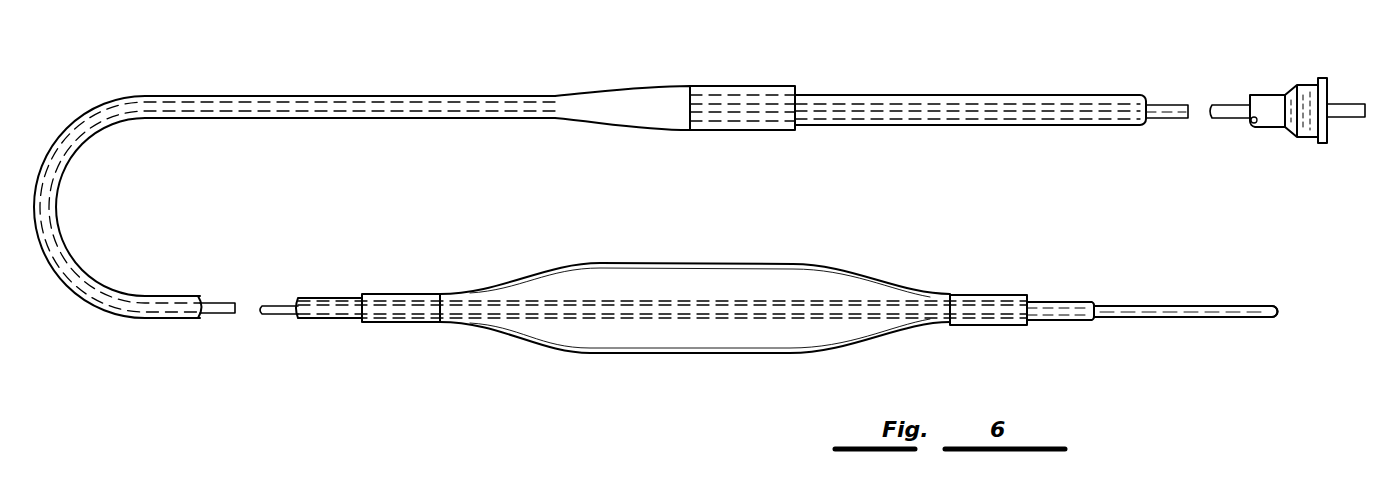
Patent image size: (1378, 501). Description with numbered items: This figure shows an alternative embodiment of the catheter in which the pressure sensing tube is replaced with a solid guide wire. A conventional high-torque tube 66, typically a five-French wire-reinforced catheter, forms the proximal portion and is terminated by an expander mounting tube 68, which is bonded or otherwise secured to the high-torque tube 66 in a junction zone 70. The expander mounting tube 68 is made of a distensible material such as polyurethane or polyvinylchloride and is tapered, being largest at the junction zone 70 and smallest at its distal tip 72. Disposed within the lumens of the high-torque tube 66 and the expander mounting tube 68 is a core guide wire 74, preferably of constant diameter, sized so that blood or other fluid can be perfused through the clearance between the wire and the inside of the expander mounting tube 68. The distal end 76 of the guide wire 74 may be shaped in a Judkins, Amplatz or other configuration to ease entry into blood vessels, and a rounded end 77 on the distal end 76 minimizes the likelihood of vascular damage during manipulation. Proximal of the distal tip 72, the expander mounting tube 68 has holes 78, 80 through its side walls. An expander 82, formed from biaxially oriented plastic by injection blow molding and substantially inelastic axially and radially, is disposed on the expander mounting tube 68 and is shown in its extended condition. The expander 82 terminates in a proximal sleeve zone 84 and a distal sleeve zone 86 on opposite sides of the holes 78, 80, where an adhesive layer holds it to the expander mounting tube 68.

The high-torque tube 66 is at (948, 95).
The expander mounting tube 68 is at (553, 97).
The junction zone 70 is at (798, 66).
The distal tip 72 is at (1085, 302).
The core guide wire 74 is at (1168, 105).
The distal end of the guide wire 76 is at (1165, 306).
The rounded end 77 is at (1270, 306).
The hole 78 is at (570, 302).
The hole 80 is at (735, 318).
The expander 82 is at (703, 263).
The proximal sleeve zone 84 is at (440, 282).
The distal sleeve zone 86 is at (1025, 283).